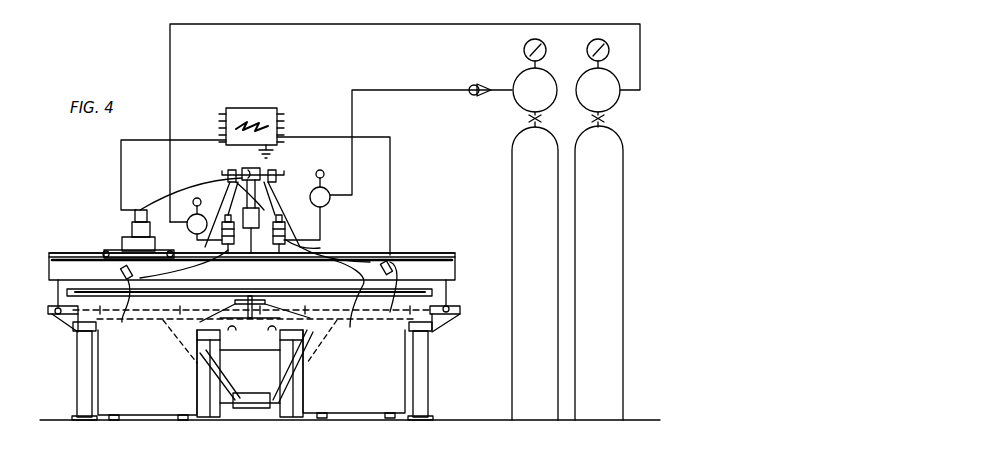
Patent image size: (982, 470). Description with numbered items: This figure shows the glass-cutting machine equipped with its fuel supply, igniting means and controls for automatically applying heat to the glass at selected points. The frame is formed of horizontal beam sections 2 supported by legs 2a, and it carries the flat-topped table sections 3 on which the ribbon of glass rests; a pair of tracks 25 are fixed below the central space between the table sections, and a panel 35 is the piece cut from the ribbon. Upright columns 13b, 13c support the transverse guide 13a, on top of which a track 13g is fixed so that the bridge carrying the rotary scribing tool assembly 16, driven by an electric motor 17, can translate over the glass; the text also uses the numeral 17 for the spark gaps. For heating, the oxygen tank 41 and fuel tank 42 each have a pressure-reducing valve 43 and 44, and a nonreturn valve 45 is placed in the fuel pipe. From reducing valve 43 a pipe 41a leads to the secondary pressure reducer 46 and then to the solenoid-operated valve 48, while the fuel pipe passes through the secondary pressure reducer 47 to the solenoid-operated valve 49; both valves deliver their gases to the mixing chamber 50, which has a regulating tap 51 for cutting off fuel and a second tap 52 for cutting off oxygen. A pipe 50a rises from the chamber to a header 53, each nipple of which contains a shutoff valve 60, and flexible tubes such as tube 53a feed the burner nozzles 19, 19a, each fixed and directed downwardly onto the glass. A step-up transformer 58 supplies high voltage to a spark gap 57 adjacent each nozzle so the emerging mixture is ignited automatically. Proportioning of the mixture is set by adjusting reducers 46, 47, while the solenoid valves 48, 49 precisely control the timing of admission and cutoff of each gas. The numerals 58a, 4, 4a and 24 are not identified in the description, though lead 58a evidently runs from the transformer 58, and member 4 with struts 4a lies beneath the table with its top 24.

The pipe 41a is at (315, 24).
The step-up transformer 58 is at (257, 115).
The electrical leads 58a is at (121, 164).
The shutoff valve 60 is at (222, 173).
The pipe 50a is at (244, 164).
The header 53 is at (272, 172).
The second tap 52 is at (228, 178).
The secondary pressure reducer 46 is at (173, 195).
The secondary pressure reducer 47 is at (323, 190).
The mixing chamber 50 is at (267, 213).
The regulating tap 51 is at (277, 215).
The solenoid-operated valve 49 is at (285, 228).
The flexible tube 53a is at (320, 248).
The spark gap 57 is at (130, 300).
The electric motor 17 is at (132, 213).
The rotary cutting or scribing tool assembly 16 is at (125, 236).
The solenoid-operated valve 48 is at (215, 250).
The track 13g is at (62, 253).
The guide 13a is at (49, 272).
The upright column 13c is at (55, 297).
The upright column 13b is at (448, 294).
The beam section 2 is at (72, 330).
The leg 2a is at (77, 393).
The burner nozzle 19a is at (155, 300).
The burner nozzle 19 is at (365, 275).
The table section 3 is at (387, 293).
The track 25 is at (252, 321).
The panel 35 is at (147, 407).
The cylinder 4 is at (253, 400).
The strut 4a is at (203, 382).
The nonreturn valve 45 is at (480, 86).
The pressure-reducing valve 44 is at (525, 100).
The pressure-reducing valve 43 is at (615, 97).
The pressure tank 42 is at (518, 213).
The pressure tank 41 is at (613, 203).
The table top 24 is at (250, 290).